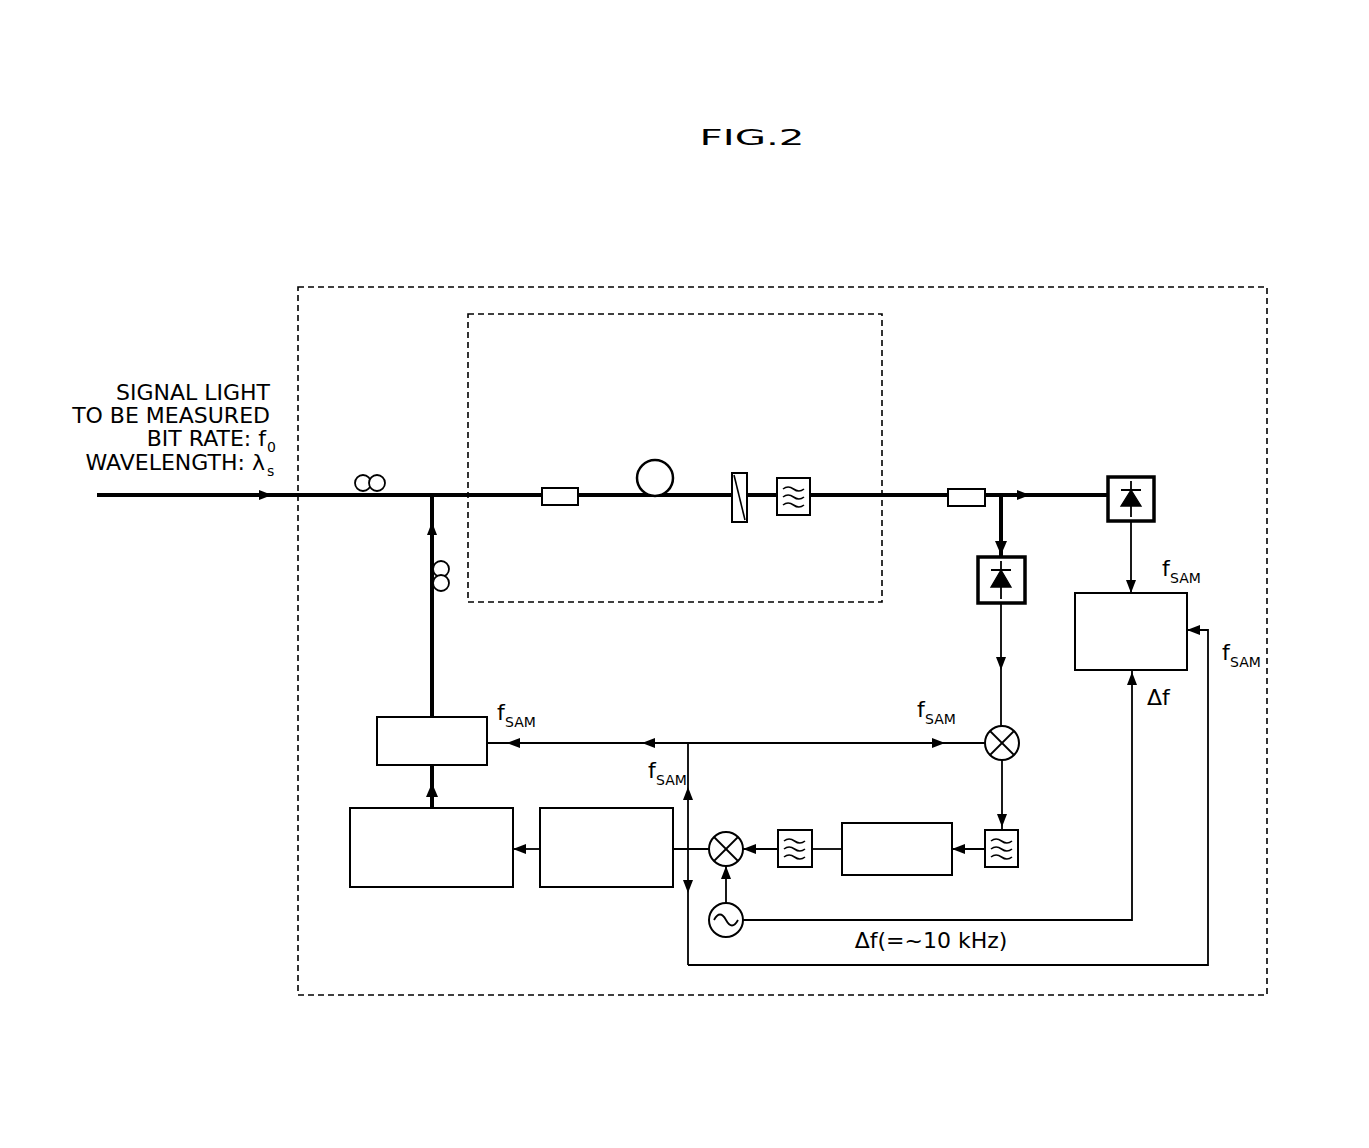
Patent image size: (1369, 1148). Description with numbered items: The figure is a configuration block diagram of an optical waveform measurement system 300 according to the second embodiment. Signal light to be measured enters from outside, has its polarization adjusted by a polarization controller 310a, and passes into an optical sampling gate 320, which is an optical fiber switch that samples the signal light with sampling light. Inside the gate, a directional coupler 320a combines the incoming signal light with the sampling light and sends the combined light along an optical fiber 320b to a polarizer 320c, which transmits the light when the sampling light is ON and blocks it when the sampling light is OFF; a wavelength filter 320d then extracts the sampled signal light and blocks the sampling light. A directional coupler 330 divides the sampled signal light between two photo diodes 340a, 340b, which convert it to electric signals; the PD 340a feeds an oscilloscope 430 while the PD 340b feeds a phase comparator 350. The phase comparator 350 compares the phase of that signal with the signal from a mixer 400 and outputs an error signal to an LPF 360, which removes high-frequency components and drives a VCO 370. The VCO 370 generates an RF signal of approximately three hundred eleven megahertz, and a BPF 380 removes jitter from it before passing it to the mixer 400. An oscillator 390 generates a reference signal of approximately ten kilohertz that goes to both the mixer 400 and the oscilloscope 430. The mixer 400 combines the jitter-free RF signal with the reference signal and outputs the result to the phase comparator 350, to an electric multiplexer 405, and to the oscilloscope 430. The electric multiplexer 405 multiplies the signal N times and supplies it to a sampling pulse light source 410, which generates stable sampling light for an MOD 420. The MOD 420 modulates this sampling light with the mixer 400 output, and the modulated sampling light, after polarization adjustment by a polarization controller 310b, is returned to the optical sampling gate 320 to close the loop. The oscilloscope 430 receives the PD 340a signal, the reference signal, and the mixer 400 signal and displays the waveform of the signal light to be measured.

The optical waveform measurement system 300 is at (1028, 280).
The polarization controller 310a is at (365, 475).
The polarization controller 310b is at (448, 591).
The optical sampling gate 320 is at (884, 352).
The directional coupler 320a is at (558, 488).
The optical fiber 320b is at (655, 460).
The polarizer 320c is at (741, 473).
The wavelength filter 320d is at (790, 516).
The directional coupler 330 is at (963, 489).
The photo diode 340a is at (1130, 477).
The photo diode 340b is at (1026, 554).
The phase comparator 350 is at (990, 727).
The LPF 360 is at (1019, 850).
The VCO 370 is at (926, 875).
The BPF 380 is at (795, 830).
The oscillator 390 is at (708, 920).
The mixer 400 is at (726, 832).
The electric multiplexer 405 is at (595, 808).
The sampling pulse light source 410 is at (505, 808).
The MOD 420 is at (445, 717).
The oscilloscope 430 is at (1098, 593).